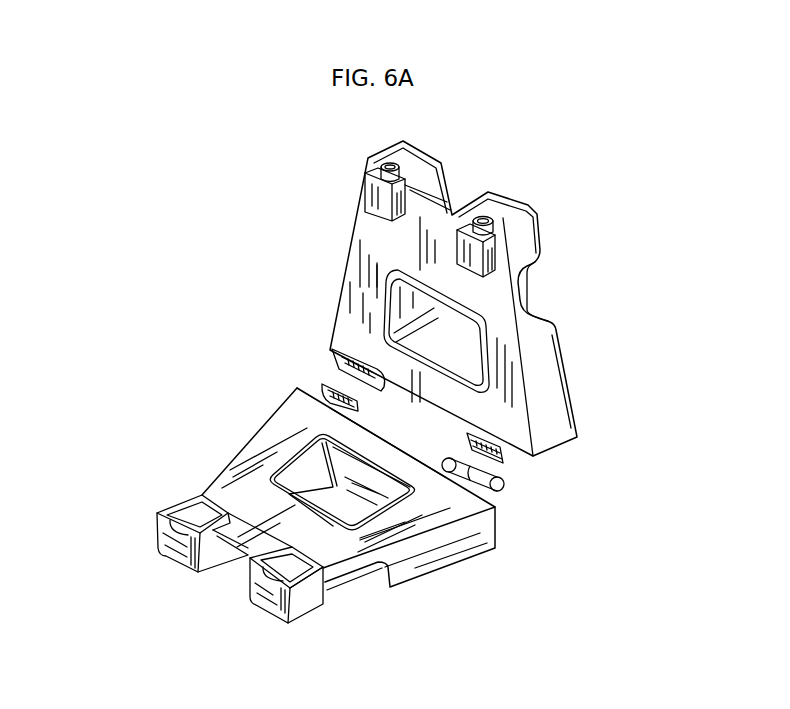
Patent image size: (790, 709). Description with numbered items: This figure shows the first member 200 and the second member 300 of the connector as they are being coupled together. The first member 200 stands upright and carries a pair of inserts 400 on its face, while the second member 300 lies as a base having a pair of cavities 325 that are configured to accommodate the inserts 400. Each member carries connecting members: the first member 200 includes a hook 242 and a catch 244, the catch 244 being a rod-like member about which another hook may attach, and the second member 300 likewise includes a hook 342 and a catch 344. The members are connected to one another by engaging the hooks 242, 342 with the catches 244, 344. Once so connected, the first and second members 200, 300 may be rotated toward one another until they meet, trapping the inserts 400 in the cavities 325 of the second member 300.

The first member 200 is at (584, 275).
The second member 300 is at (278, 510).
The insert 400 is at (367, 188).
The hook 242 is at (494, 448).
The catch 244 is at (332, 353).
The hook 342 is at (322, 386).
The catch 344 is at (505, 485).
The cavity 325 is at (193, 515).